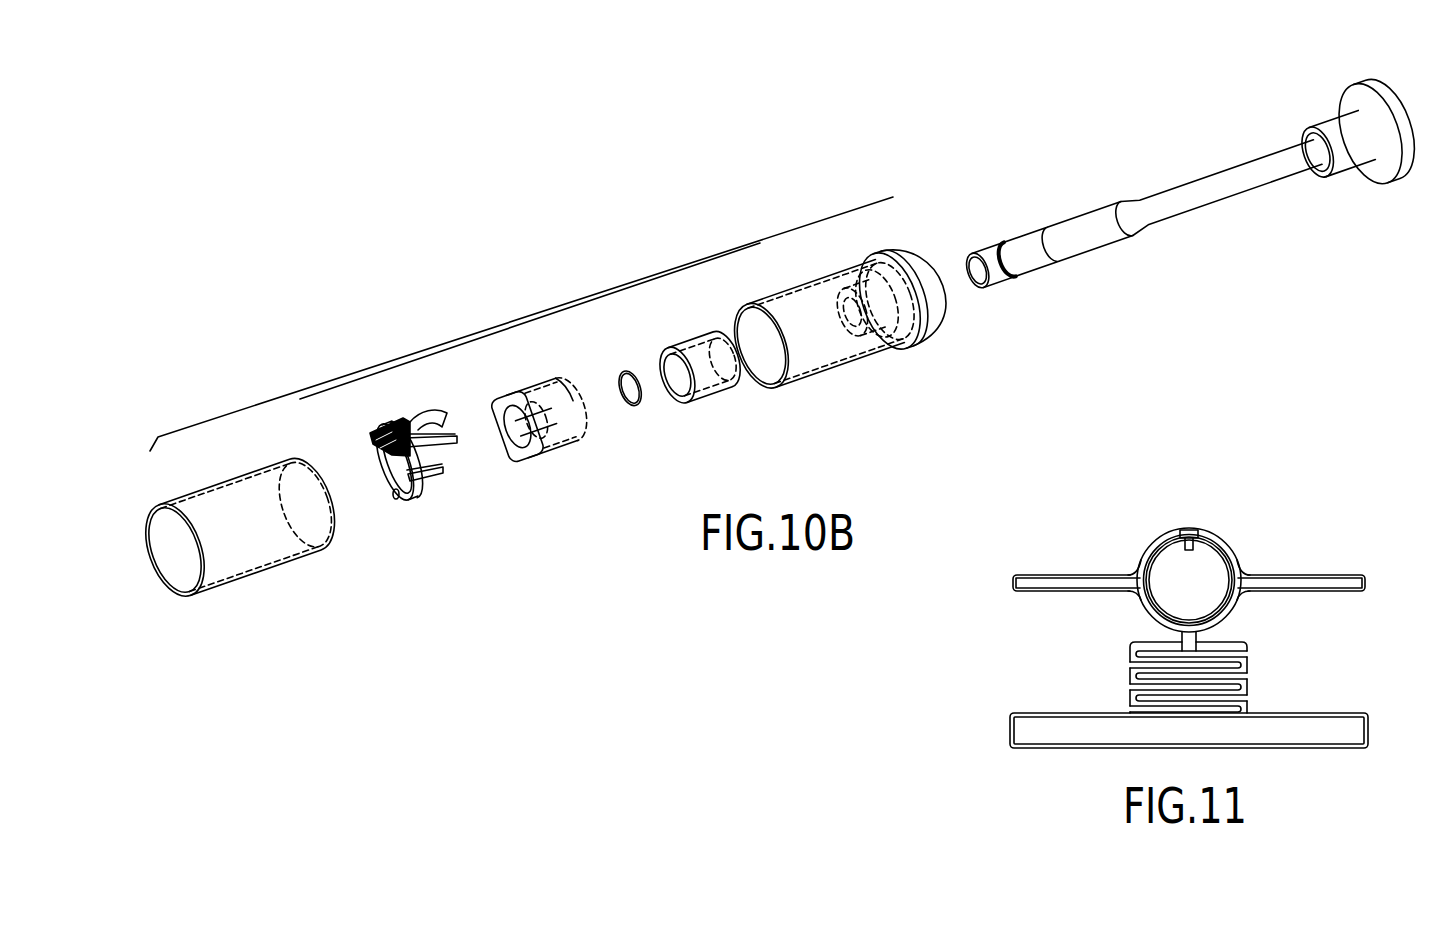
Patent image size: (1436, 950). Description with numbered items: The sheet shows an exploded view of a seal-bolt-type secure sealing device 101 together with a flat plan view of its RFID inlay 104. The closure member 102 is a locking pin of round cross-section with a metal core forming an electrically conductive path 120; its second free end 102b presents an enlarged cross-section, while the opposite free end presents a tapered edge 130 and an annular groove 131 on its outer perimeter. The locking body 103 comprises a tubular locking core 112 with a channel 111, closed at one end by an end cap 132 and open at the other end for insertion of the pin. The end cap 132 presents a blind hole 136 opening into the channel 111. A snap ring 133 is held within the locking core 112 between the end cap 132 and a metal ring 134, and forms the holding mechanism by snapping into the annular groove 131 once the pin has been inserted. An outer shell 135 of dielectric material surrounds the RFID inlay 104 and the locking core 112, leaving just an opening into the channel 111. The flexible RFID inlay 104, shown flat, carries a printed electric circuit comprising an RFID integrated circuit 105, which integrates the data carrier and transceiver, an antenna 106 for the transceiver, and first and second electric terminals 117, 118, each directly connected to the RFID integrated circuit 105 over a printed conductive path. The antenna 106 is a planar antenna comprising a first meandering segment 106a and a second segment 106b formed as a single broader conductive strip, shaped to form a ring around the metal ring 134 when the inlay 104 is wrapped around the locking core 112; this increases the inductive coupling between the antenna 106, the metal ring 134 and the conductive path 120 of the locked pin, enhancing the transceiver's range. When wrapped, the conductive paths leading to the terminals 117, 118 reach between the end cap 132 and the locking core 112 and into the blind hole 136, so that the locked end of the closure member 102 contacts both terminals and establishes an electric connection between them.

In FIG. 10B, the seal-bolt-type secure sealing device 101 is at (532, 140).
In FIG. 10B, the closure member 102 is at (1186, 170).
In FIG. 10B, the second free end 102b is at (1346, 100).
In FIG. 10B, the locking body 103 is at (518, 324).
In FIG. 10B, the flexible RFID inlay 104 is at (395, 470).
In FIG. 11, the flexible RFID inlay 104 is at (1258, 533).
In FIG. 10B, the RFID integrated circuit 105 is at (399, 497).
In FIG. 11, the RFID integrated circuit 105 is at (1188, 529).
In FIG. 10B, the antenna 106 is at (391, 421).
In FIG. 11, the antenna 106 is at (1272, 662).
In FIG. 11, the first meandering segment 106a is at (1136, 668).
In FIG. 11, the second segment 106b is at (1069, 736).
In FIG. 10B, the channel 111 is at (863, 352).
In FIG. 10B, the tubular locking core 112 is at (806, 286).
In FIG. 10B, the first electric terminal 117 is at (446, 469).
In FIG. 11, the first electric terminal 117 is at (1048, 579).
In FIG. 10B, the second electric terminal 118 is at (455, 444).
In FIG. 11, the second electric terminal 118 is at (1327, 578).
In FIG. 10B, the electrically conductive path 120 is at (1036, 266).
In FIG. 10B, the tapered edge 130 is at (968, 258).
In FIG. 10B, the annular groove 131 is at (1008, 247).
In FIG. 10B, the end cap 132 is at (540, 385).
In FIG. 10B, the snap ring 133 is at (641, 406).
In FIG. 10B, the metal ring 134 is at (690, 338).
In FIG. 10B, the outer shell 135 is at (225, 480).
In FIG. 10B, the blind hole 136 is at (578, 441).